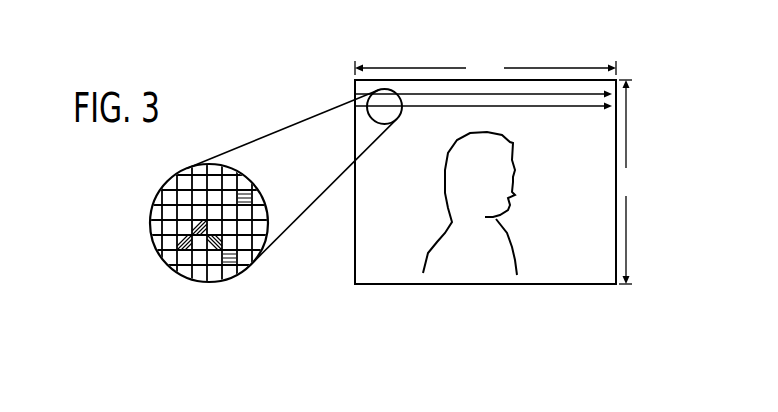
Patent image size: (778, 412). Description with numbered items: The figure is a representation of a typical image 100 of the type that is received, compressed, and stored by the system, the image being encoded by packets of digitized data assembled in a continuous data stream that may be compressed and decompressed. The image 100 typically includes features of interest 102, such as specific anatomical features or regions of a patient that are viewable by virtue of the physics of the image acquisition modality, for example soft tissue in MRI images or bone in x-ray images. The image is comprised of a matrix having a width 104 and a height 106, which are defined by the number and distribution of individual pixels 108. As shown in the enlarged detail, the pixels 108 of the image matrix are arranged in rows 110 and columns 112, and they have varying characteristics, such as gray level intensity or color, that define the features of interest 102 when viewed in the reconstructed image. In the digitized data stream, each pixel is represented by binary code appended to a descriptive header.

The image 100 is at (320, 279).
The features of interest 102 is at (535, 272).
The width 104 is at (485, 69).
The height 106 is at (633, 182).
The pixels 108 is at (170, 224).
The rows 110 is at (146, 197).
The columns 112 is at (170, 166).